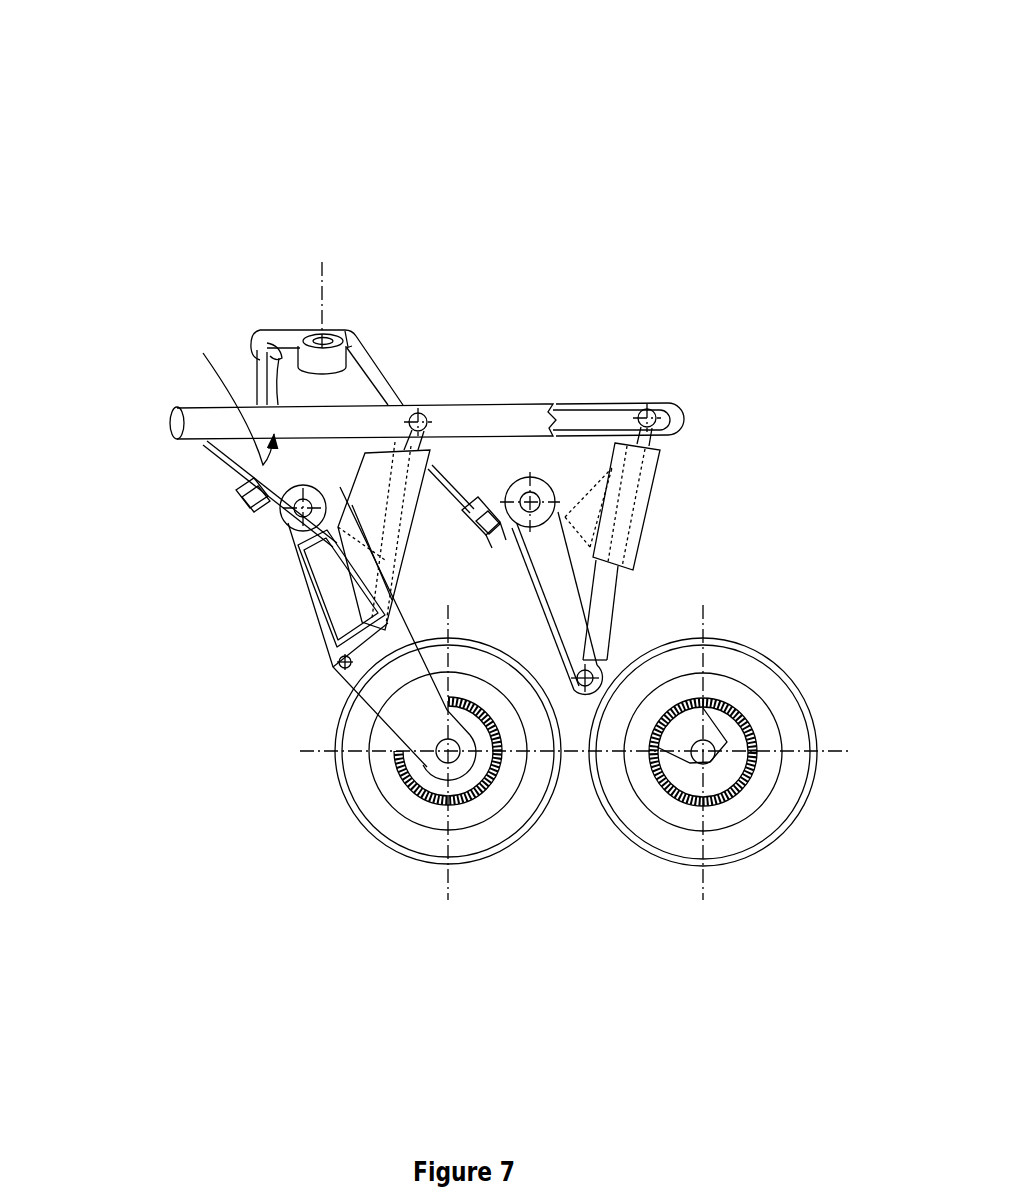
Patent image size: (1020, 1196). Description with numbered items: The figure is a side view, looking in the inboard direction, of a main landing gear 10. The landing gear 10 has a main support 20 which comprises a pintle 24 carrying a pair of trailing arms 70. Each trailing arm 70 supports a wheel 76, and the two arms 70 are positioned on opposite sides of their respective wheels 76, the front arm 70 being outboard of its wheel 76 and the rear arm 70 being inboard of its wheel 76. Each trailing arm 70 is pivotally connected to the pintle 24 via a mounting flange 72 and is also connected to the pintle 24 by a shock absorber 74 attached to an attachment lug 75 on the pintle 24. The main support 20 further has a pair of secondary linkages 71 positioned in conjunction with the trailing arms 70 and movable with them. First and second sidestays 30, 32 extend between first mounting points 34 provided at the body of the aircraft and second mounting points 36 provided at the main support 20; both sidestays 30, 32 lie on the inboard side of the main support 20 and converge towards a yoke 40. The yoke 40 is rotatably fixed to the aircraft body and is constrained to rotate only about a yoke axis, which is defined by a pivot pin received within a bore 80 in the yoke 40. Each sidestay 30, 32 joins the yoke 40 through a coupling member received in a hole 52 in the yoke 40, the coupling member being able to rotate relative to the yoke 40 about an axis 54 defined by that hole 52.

The main landing gear 10 is at (643, 100).
The main support 20 is at (742, 330).
The pintle 24 is at (532, 417).
The first sidestay 30 is at (402, 362).
The second sidestay 32 is at (222, 378).
The first mounting point 34 is at (372, 335).
The second mounting point 36 is at (213, 531).
The yoke 40 is at (330, 362).
The hole 52 is at (320, 400).
The axis 54 is at (326, 265).
The trailing arm 70 is at (633, 630).
The secondary linkage 71 is at (550, 553).
The mounting flange 72 is at (568, 478).
The shock absorber 74 is at (620, 580).
The attachment lug 75 is at (602, 418).
The wheel 76 is at (680, 845).
The bore 80 is at (189, 329).